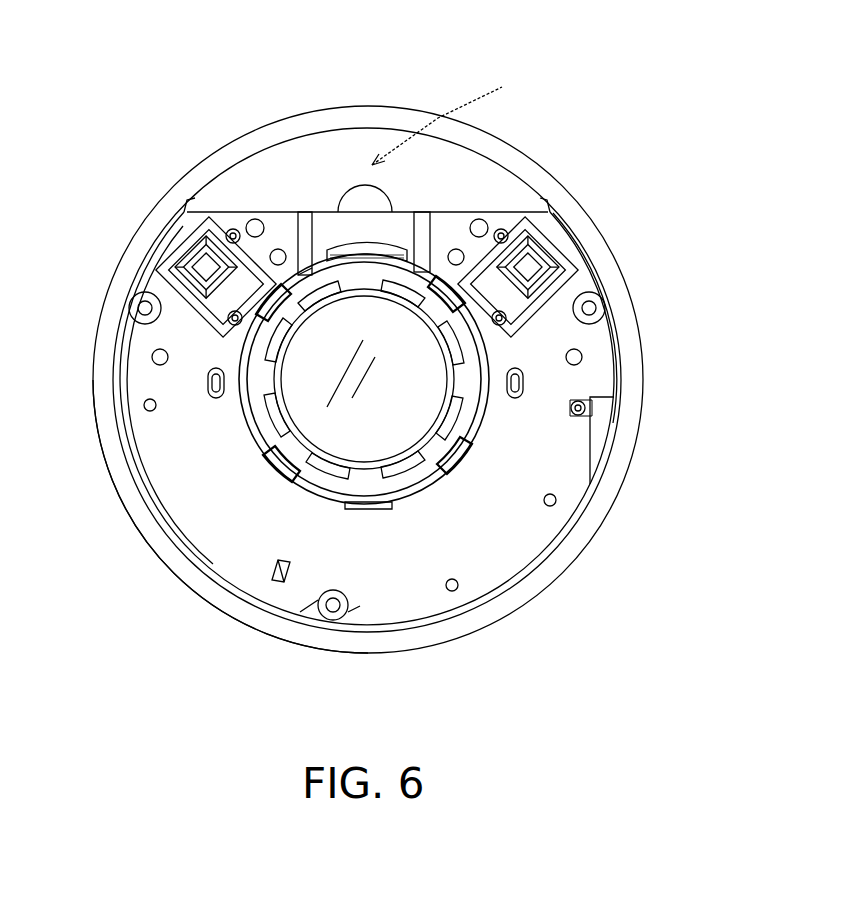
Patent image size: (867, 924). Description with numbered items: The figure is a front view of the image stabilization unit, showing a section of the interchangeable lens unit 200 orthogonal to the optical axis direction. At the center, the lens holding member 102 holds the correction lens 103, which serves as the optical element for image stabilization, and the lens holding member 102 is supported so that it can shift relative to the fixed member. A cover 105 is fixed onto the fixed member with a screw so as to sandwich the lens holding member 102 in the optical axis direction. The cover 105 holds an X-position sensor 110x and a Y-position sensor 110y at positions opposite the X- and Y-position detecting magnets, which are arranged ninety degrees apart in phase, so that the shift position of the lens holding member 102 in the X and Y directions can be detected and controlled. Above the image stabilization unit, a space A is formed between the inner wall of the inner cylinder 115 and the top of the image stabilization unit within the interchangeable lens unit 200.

The interchangeable lens unit 200 is at (407, 93).
The space A is at (463, 114).
The cover 105 is at (178, 505).
The inner cylinder 115 is at (205, 590).
The X-position sensor 110x is at (555, 250).
The Y-position sensor 110y is at (172, 258).
The lens holding member 102 is at (450, 447).
The correction lens 103 is at (367, 403).